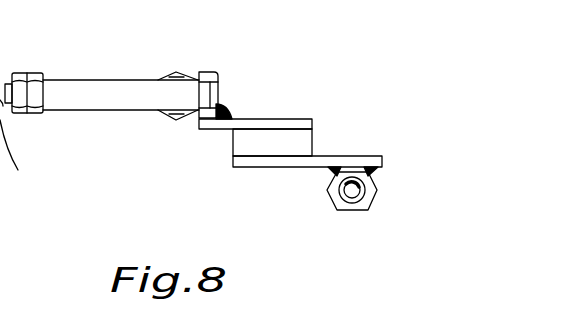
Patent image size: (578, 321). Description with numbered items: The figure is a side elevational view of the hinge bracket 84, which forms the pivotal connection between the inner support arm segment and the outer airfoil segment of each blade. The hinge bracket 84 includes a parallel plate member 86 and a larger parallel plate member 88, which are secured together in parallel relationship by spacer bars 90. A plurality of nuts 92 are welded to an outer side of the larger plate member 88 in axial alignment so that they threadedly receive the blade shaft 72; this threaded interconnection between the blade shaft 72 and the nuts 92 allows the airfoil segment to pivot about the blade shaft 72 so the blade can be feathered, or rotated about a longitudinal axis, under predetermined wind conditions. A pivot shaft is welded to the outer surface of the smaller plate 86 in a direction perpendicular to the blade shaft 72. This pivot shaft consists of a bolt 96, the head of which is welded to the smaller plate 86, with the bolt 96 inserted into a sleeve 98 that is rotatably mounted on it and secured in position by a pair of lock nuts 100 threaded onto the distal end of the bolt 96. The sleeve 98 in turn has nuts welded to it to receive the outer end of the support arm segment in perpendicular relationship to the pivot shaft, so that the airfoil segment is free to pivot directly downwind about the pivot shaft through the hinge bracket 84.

The blade shaft 72 is at (12, 167).
The hinge bracket 84 is at (204, 182).
The parallel plate member 86 is at (252, 118).
The larger parallel plate member 88 is at (253, 161).
The spacer bar 90 is at (303, 145).
The nut 92 is at (357, 205).
The bolt 96 is at (202, 72).
The sleeve 98 is at (123, 92).
The lock nut 100 is at (32, 72).